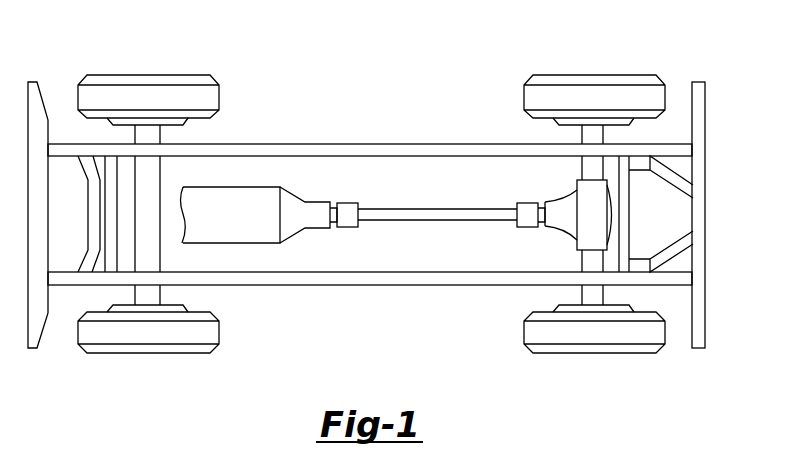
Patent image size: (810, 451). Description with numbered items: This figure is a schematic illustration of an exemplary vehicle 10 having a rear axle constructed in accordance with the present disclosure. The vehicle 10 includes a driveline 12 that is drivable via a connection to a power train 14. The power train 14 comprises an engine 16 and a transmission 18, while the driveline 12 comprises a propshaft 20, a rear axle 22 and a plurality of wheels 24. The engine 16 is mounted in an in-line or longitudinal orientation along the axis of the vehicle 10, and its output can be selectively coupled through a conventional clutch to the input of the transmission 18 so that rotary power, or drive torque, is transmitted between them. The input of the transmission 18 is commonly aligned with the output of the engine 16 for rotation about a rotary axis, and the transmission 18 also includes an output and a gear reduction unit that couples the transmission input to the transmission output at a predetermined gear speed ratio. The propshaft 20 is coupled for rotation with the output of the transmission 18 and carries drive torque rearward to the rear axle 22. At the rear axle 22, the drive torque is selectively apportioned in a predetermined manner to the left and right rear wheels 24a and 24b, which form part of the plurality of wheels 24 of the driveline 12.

The vehicle 10 is at (323, 88).
The driveline 12 is at (539, 207).
The power train 14 is at (259, 237).
The engine 16 is at (242, 226).
The transmission 18 is at (320, 203).
The propshaft 20 is at (453, 210).
The rear axle 22 is at (570, 238).
The wheels 24 is at (415, 188).
The left rear wheel 24a is at (535, 327).
The right rear wheel 24b is at (527, 90).